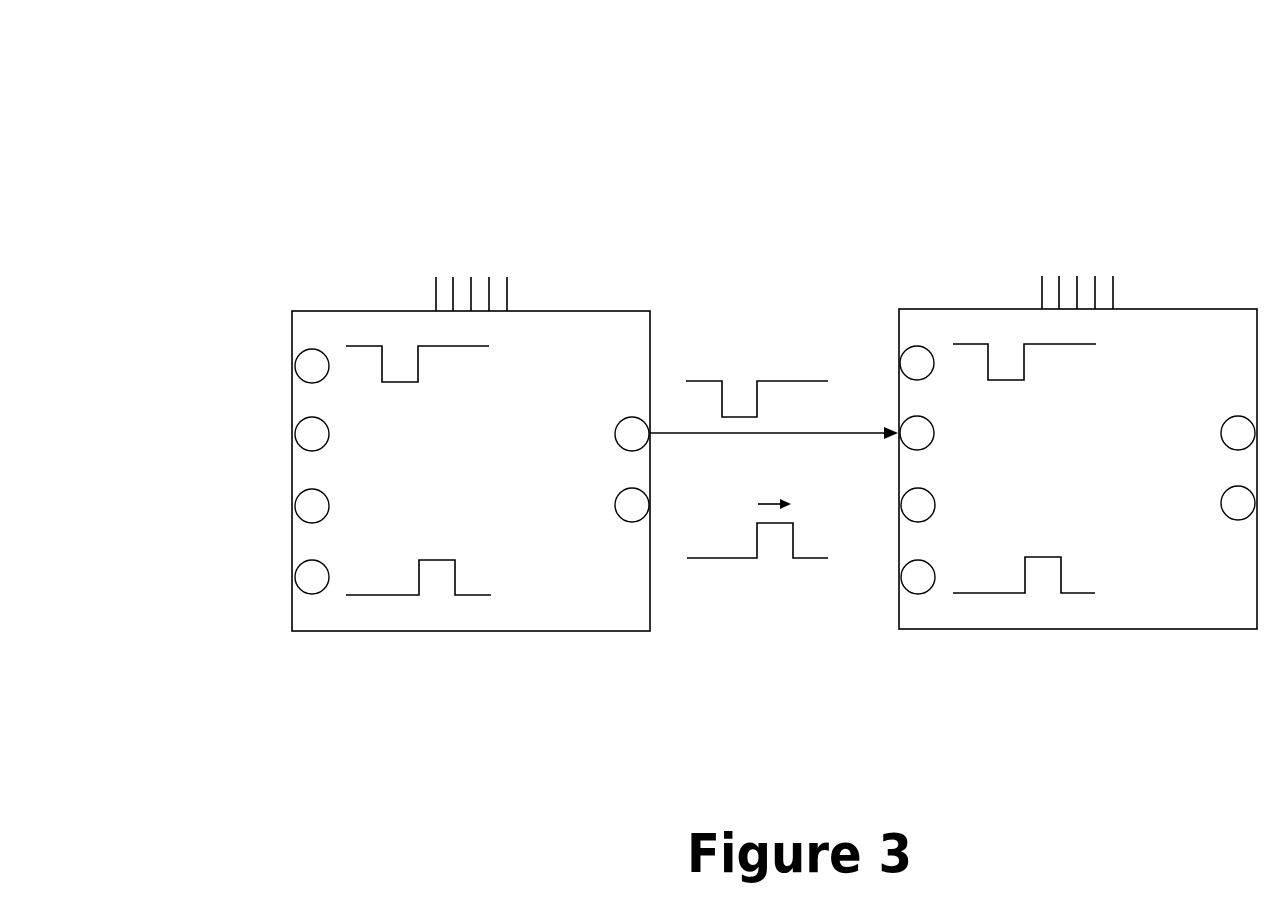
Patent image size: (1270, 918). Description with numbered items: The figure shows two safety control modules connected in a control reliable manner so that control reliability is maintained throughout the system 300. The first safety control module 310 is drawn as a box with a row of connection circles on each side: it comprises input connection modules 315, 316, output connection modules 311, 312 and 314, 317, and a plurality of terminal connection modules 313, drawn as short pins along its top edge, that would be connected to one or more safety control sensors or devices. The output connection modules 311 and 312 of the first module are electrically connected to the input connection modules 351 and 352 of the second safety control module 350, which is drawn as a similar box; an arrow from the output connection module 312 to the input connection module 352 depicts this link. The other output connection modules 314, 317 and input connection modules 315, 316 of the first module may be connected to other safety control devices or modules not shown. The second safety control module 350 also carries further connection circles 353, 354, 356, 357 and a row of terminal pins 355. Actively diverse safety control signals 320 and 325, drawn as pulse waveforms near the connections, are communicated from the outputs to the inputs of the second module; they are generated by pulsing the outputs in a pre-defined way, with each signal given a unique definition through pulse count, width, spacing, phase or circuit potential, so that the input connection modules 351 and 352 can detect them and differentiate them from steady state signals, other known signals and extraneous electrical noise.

The system 300 is at (1200, 54).
The first safety control module 310 is at (598, 603).
The output connection module 311 is at (597, 505).
The output connection module 312 is at (603, 434).
The terminal connection modules 313 is at (471, 279).
The output connection module 314 is at (279, 366).
The input connection module 315 is at (279, 434).
The input connection module 316 is at (279, 506).
The output connection module 317 is at (279, 577).
The actively diverse safety control signal 320 is at (406, 365).
The actively diverse safety control signal 325 is at (437, 586).
The second safety control module 350 is at (1204, 602).
The input connection module 351 is at (948, 505).
The input connection module 352 is at (948, 433).
The input port of second module 353 is at (918, 576).
The input port of second module 354 is at (915, 363).
The input/output pins of second module 355 is at (1082, 277).
The output port of second module 356 is at (1208, 433).
The output port of second module 357 is at (1208, 503).